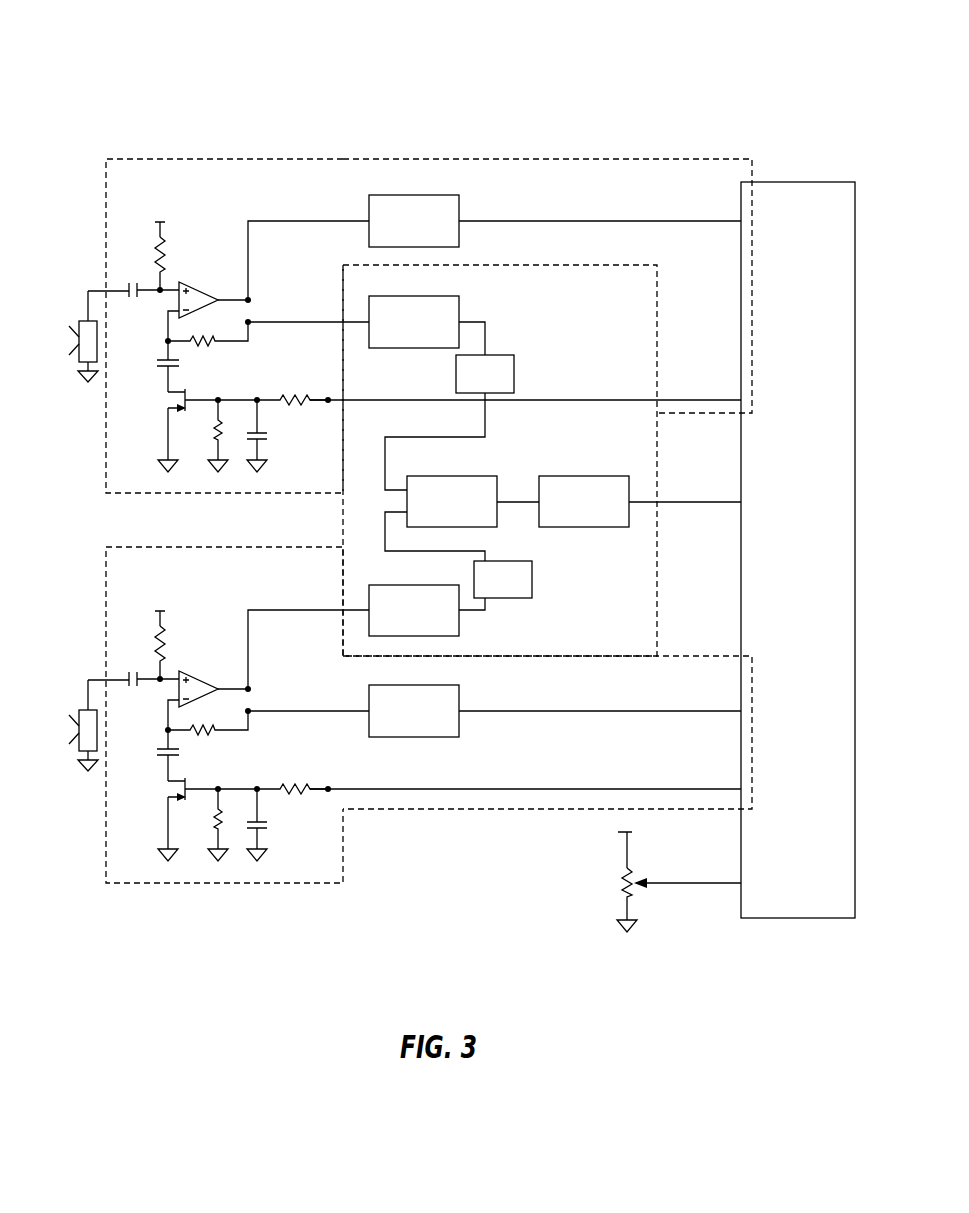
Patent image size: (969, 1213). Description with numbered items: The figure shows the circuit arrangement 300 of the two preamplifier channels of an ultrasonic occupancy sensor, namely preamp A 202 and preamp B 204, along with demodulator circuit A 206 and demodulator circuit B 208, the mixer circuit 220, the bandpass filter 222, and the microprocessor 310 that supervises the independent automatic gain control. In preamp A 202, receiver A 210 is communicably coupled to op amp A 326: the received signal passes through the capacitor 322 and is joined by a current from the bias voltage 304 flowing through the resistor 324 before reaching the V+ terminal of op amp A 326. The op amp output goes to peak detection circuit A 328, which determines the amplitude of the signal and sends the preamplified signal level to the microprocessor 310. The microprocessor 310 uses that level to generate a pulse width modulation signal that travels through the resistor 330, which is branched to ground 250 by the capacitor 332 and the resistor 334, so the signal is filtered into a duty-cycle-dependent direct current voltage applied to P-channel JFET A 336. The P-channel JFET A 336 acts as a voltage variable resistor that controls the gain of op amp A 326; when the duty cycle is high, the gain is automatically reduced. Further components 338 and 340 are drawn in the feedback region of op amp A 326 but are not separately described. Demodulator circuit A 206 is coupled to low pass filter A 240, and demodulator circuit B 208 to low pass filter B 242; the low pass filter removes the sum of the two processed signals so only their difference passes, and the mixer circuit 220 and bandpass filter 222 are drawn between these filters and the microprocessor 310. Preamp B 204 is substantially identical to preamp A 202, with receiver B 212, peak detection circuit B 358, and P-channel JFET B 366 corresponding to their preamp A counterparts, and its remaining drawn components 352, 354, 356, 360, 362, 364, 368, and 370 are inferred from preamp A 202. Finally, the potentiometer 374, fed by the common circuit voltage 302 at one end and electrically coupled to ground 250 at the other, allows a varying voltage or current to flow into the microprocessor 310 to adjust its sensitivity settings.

The circuit 300 is at (120, 55).
The preamp A 202 is at (617, 160).
The preamp B 204 is at (617, 656).
The demodulator circuit A 206 is at (394, 335).
The demodulator circuit B 208 is at (394, 623).
The receiver A 210 is at (88, 318).
The receiver B 212 is at (88, 707).
The mixer circuit 220 is at (432, 514).
The bandpass filter 222 is at (564, 514).
The low pass filter A 240 is at (465, 387).
The low pass filter B 242 is at (483, 592).
The ground 250 is at (84, 384).
The common circuit voltage 302 is at (618, 833).
The bias voltage 304 is at (158, 221).
The microprocessor 310 is at (778, 563).
The capacitor 322 is at (133, 281).
The resistor 324 is at (166, 256).
The op amp A 326 is at (200, 287).
The peak detection circuit A 328 is at (394, 234).
The resistor 330 is at (299, 395).
The capacitor 332 is at (268, 437).
The resistor 334 is at (213, 428).
The P-channel JFET A 336 is at (165, 400).
The capacitor 338 is at (159, 362).
The feedback resistor 340 is at (214, 344).
The capacitor 352 is at (133, 670).
The resistor 354 is at (166, 645).
The amplifier 356 is at (200, 676).
The peak detection circuit B 358 is at (394, 724).
The resistor 360 is at (299, 784).
The capacitor 362 is at (268, 826).
The resistor 364 is at (213, 817).
The P-channel JFET B 366 is at (165, 789).
The capacitor 368 is at (159, 751).
The feedback resistor 370 is at (214, 733).
The potentiometer 374 is at (622, 888).